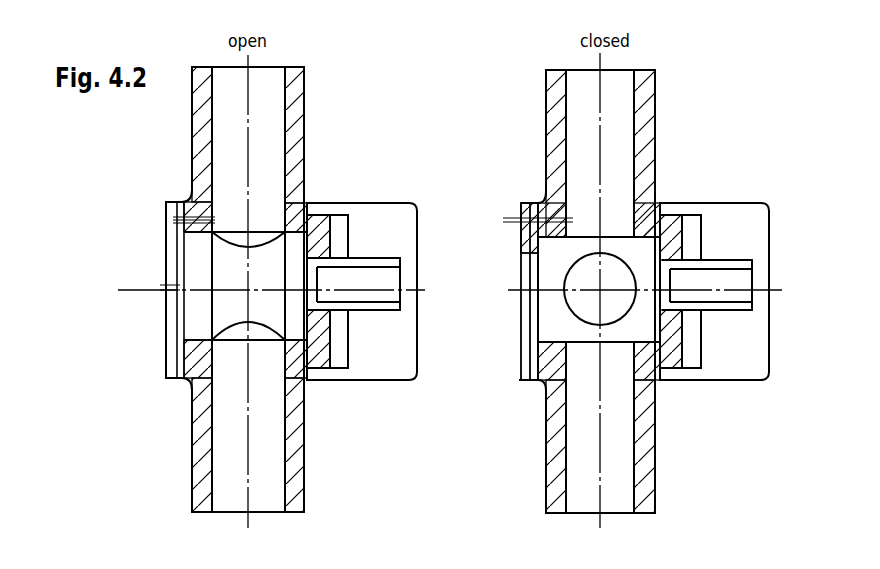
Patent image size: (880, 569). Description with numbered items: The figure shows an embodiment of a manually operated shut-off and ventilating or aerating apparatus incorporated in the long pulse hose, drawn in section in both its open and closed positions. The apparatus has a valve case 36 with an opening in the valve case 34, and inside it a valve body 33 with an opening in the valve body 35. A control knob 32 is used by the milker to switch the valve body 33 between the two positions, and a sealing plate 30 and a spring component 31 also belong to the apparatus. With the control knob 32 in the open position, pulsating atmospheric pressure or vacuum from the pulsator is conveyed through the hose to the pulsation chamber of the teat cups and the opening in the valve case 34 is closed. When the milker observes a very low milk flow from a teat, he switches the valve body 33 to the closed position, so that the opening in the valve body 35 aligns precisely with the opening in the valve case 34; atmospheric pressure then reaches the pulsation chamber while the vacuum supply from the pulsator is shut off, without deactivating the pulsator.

The sealing plate 30 is at (668, 222).
The spring component 31 is at (690, 223).
The control knob 32 is at (753, 217).
The valve body 33 is at (527, 313).
The opening in the valve case 34 is at (563, 224).
The opening in the valve body 35 is at (521, 220).
The valve case 36 is at (653, 90).